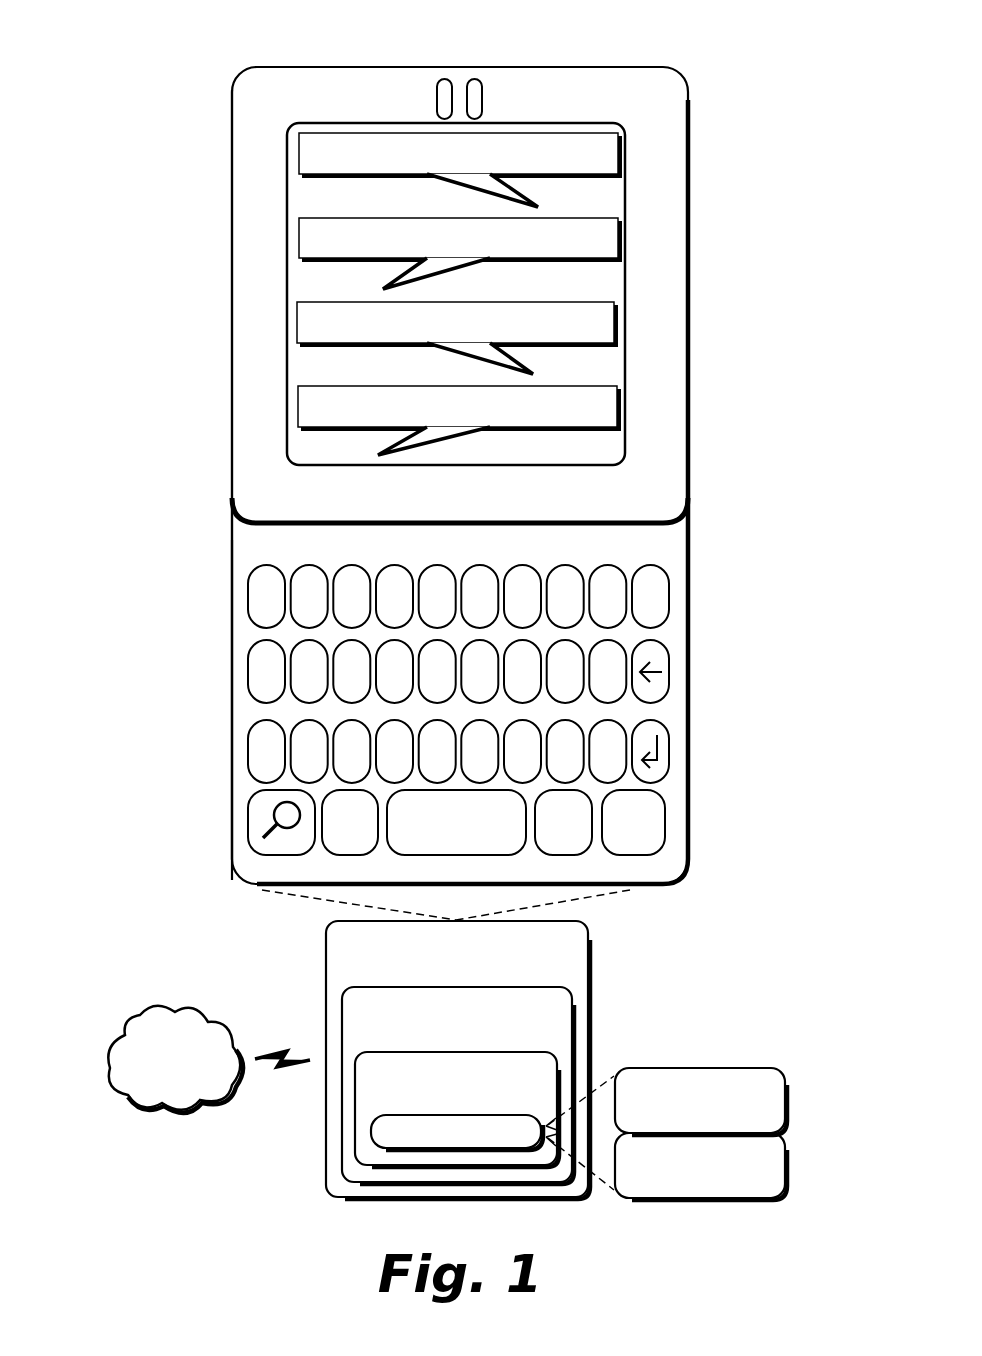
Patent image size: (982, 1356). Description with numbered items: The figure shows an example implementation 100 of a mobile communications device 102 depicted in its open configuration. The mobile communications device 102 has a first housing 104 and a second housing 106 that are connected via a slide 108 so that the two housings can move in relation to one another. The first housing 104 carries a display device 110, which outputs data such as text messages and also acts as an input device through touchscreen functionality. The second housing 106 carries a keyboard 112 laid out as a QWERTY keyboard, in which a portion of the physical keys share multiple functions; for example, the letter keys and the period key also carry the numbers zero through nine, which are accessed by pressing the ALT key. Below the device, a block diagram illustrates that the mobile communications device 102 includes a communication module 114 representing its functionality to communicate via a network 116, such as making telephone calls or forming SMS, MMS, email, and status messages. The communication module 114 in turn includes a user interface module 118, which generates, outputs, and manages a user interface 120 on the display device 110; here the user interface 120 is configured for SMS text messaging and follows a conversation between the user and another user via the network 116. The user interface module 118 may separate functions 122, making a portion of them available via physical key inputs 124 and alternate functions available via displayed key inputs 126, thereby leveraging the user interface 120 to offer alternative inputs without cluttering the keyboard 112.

The example implementation 100 is at (160, 58).
The mobile communications device 102 is at (458, 1060).
The first housing 104 is at (246, 118).
The second housing 106 is at (241, 540).
The slide 108 is at (689, 482).
The display device 110 is at (537, 127).
The keyboard 112 is at (705, 548).
The communication module 114 is at (458, 1085).
The network 116 is at (209, 1059).
The user interface module 118 is at (457, 1109).
The user interface 120 is at (458, 296).
The functions 122 is at (457, 1132).
The physical key inputs 124 is at (701, 1101).
The displayed key inputs 126 is at (701, 1166).